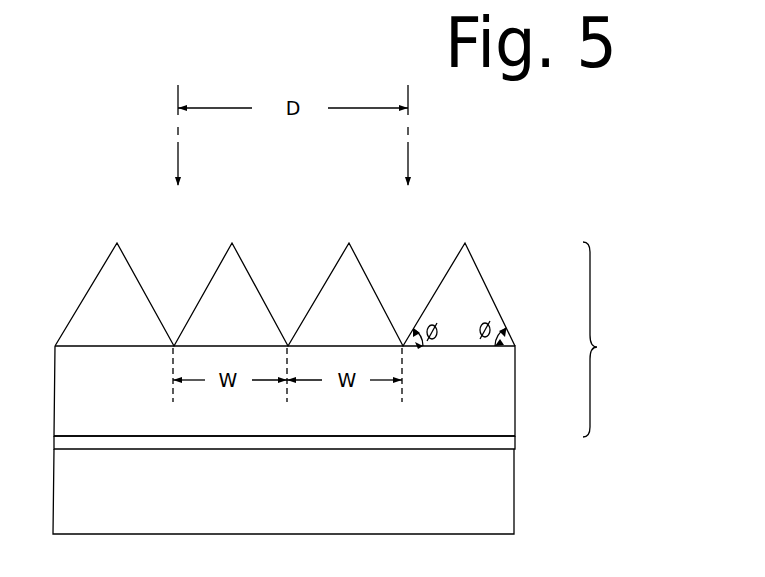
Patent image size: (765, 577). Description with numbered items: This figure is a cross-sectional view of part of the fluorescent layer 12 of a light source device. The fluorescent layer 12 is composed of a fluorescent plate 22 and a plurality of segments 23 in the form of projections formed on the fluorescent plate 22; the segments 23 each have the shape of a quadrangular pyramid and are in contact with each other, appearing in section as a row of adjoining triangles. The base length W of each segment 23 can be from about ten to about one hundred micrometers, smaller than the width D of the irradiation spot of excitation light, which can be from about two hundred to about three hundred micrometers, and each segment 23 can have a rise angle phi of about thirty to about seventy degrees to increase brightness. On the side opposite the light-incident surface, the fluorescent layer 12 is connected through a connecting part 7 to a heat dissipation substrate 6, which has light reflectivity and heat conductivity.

The segments 23 is at (483, 298).
The fluorescent plate 22 is at (515, 390).
The connecting part 7 is at (514, 444).
The heat dissipation substrate 6 is at (510, 495).
The fluorescent layer 12 is at (601, 339).